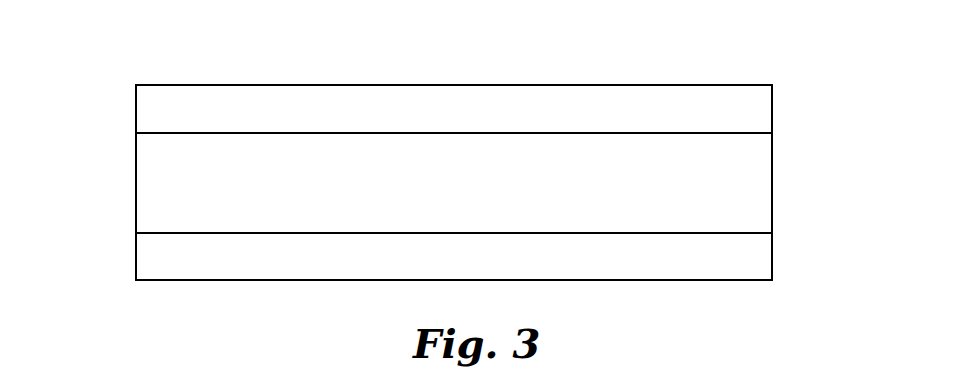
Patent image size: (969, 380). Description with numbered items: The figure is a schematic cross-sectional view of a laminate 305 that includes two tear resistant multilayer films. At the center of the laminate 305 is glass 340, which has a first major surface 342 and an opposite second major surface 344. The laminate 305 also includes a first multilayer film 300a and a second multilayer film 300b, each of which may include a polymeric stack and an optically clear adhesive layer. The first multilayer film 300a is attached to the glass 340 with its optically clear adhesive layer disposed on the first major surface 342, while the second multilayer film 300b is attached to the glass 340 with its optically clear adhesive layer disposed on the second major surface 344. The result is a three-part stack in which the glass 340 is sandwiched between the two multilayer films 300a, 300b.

The laminate 305 is at (443, 180).
The first multilayer film 300a is at (493, 105).
The second multilayer film 300b is at (603, 262).
The glass 340 is at (153, 165).
The first major surface 342 is at (645, 132).
The second major surface 344 is at (717, 233).